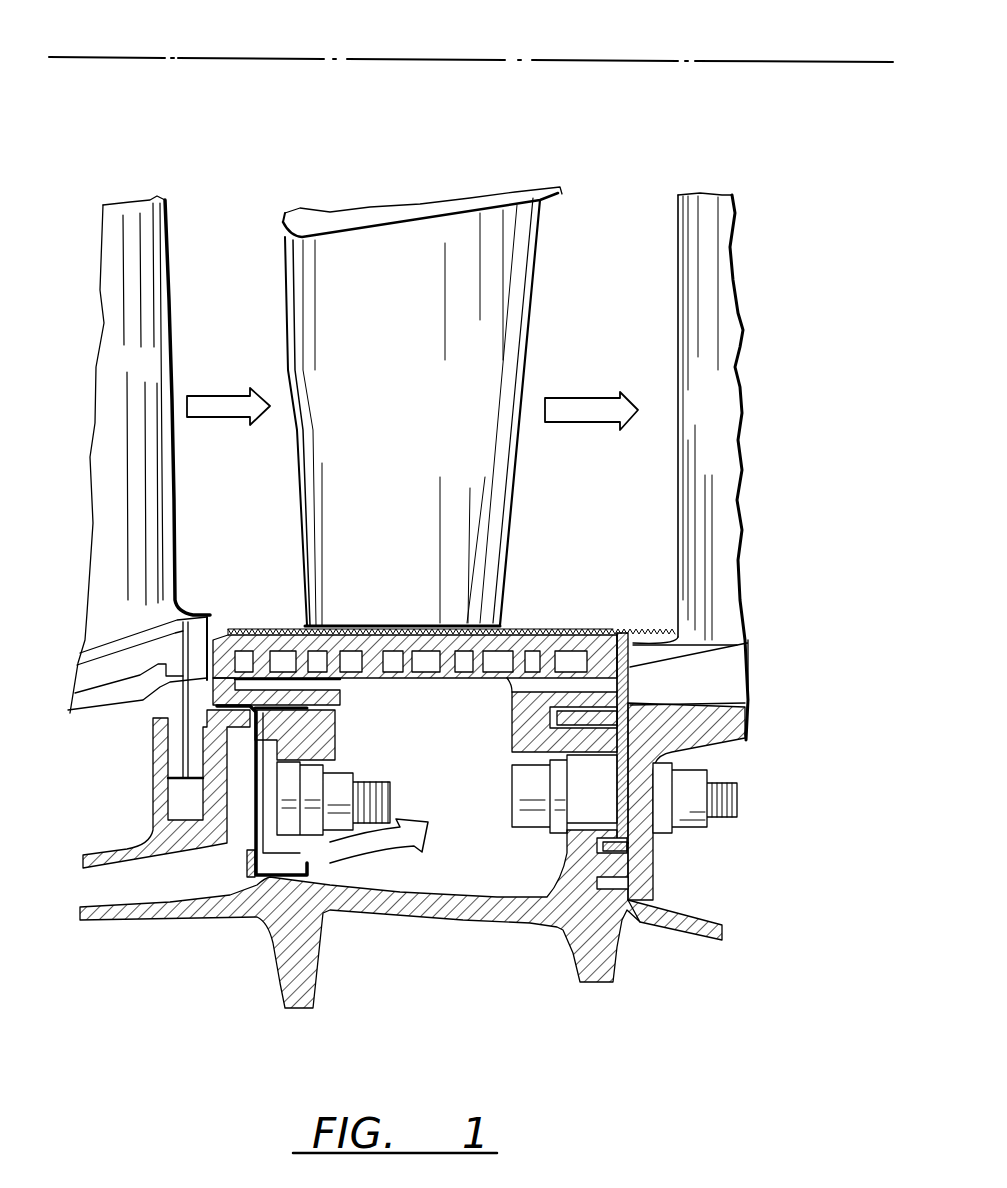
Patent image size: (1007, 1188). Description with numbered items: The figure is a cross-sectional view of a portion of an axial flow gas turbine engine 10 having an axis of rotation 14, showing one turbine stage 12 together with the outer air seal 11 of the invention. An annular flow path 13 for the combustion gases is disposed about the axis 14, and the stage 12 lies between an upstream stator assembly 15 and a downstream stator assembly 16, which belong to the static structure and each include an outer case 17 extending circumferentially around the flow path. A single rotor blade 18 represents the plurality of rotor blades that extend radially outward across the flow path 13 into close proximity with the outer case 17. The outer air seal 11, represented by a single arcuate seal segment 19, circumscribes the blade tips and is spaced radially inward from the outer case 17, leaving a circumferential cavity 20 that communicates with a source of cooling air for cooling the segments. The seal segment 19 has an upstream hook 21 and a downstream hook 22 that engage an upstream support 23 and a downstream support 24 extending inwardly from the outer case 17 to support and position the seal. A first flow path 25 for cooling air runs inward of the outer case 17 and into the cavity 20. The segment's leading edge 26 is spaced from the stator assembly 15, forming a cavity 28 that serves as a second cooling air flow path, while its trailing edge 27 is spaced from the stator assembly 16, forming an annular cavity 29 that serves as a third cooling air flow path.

The axial flow gas turbine engine 10 is at (421, 949).
The outer air seal 11 is at (628, 642).
The turbine stage 12 is at (449, 366).
The annular flow path 13 is at (227, 393).
The axis of rotation 14 is at (290, 58).
The upstream stator assembly 15 is at (105, 467).
The downstream stator assembly 16 is at (723, 444).
The outer case 17 is at (683, 920).
The rotor blade 18 is at (410, 404).
The seal segment 19 is at (594, 633).
The cavity 20 is at (455, 796).
The upstream hook 21 is at (340, 742).
The downstream hook 22 is at (512, 740).
The upstream support 23 is at (338, 708).
The downstream support 24 is at (680, 742).
The first flow path 25 is at (330, 870).
The leading edge 26 is at (227, 640).
The trailing edge 27 is at (628, 640).
The cavity 28 is at (207, 670).
The annular cavity 29 is at (633, 668).